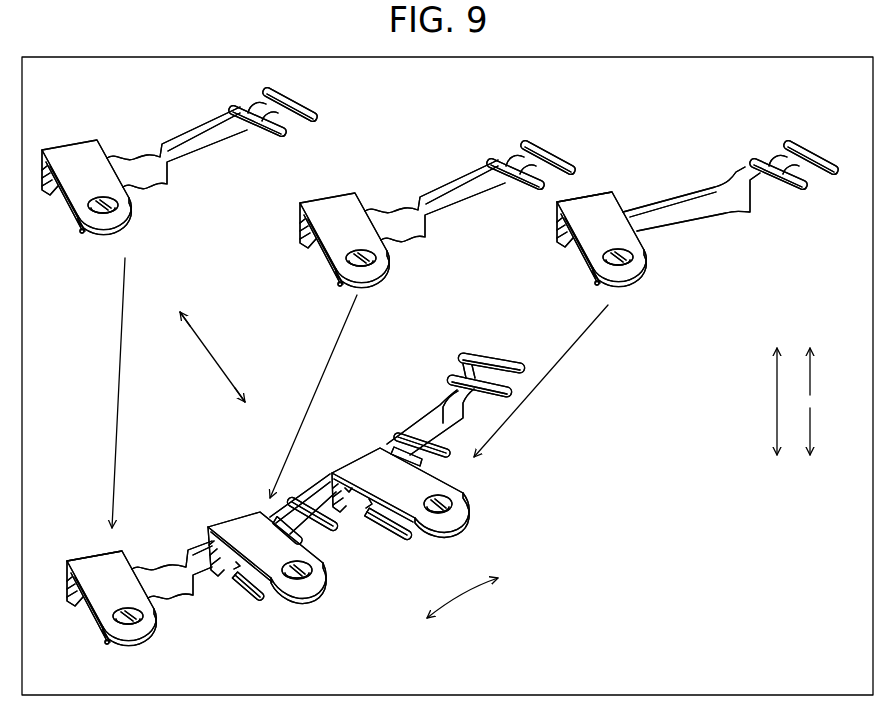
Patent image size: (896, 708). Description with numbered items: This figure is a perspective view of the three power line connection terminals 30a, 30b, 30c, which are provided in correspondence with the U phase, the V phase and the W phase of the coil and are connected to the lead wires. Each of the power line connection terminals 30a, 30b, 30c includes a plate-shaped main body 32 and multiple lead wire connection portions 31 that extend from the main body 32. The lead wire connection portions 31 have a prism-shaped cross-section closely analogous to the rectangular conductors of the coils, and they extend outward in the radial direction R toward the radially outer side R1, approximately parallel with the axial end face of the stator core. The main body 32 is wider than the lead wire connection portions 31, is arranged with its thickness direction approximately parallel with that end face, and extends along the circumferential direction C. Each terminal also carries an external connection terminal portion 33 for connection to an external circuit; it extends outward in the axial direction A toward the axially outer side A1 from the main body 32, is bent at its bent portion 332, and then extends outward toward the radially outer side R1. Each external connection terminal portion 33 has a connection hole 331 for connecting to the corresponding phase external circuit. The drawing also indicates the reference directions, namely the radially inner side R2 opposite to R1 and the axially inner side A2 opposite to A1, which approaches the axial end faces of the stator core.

The power line connection terminal 30a is at (123, 145).
The power line connection terminal 30b is at (418, 145).
The power line connection terminal 30c is at (720, 145).
The lead wire connection portion 31 is at (279, 137).
The main body 32 is at (198, 148).
The external connection terminal portion 33 is at (80, 189).
The connection hole 331 is at (106, 198).
The bent portion 332 is at (93, 552).
The radial direction R is at (212, 357).
The radially outer side direction R1 is at (249, 405).
The radially inner side direction R2 is at (175, 308).
The axial direction A is at (767, 401).
The axially outer side direction A1 is at (796, 371).
The axially inner side direction A2 is at (797, 431).
The circumferential direction C is at (462, 605).